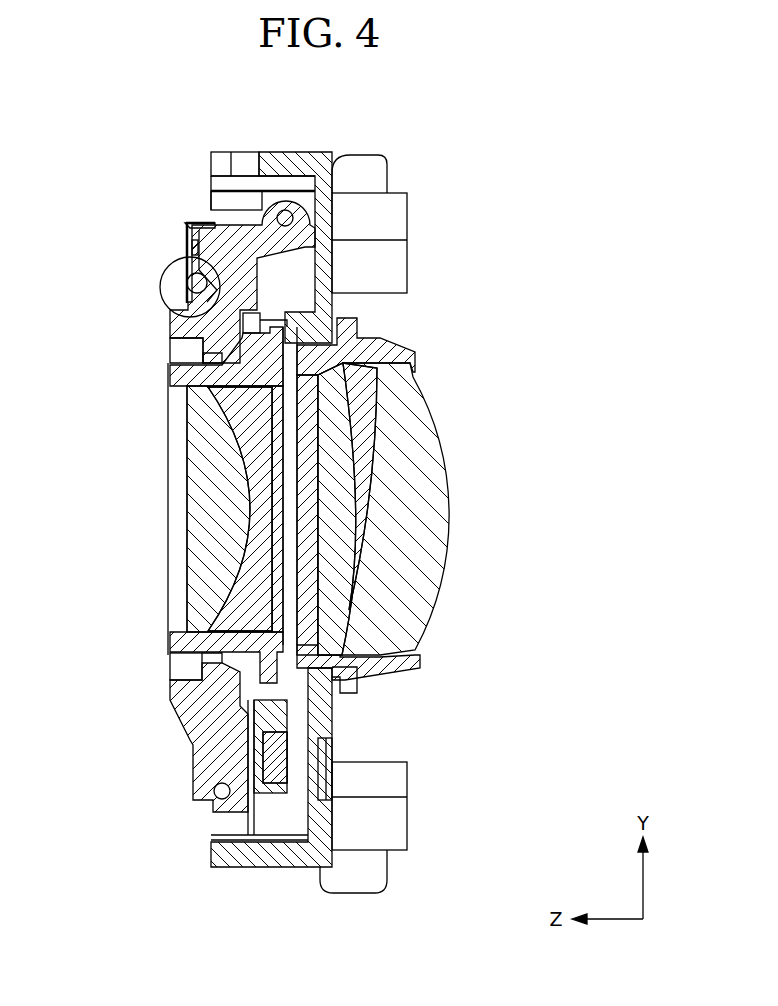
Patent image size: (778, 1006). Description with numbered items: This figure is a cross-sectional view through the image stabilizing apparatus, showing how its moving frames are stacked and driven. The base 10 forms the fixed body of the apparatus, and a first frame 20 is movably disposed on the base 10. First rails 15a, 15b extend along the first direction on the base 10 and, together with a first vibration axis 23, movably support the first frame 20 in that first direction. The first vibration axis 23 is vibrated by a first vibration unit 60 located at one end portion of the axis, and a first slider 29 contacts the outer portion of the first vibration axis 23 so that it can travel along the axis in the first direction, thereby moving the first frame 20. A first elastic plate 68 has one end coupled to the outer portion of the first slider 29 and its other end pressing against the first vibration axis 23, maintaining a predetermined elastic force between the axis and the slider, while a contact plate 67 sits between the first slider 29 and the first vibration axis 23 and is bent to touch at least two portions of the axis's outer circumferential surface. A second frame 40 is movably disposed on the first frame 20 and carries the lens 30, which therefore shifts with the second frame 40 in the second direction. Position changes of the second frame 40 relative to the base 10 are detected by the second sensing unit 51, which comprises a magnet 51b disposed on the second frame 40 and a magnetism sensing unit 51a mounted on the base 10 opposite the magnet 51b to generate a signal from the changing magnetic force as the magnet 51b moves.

The base 10 is at (332, 308).
The first rail 15a is at (285, 210).
The first rail 15b is at (214, 793).
The first frame 20 is at (174, 721).
The first vibration axis 23 is at (197, 285).
The first slider 29 is at (225, 257).
The lens 30 is at (215, 463).
The second frame 40 is at (180, 655).
The second sensing unit 51 is at (310, 837).
The magnetism sensing unit 51a is at (333, 765).
The magnet 51b is at (279, 785).
The first vibration unit 60 is at (160, 296).
The contact plate 67 is at (194, 247).
The first elastic plate 68 is at (185, 231).